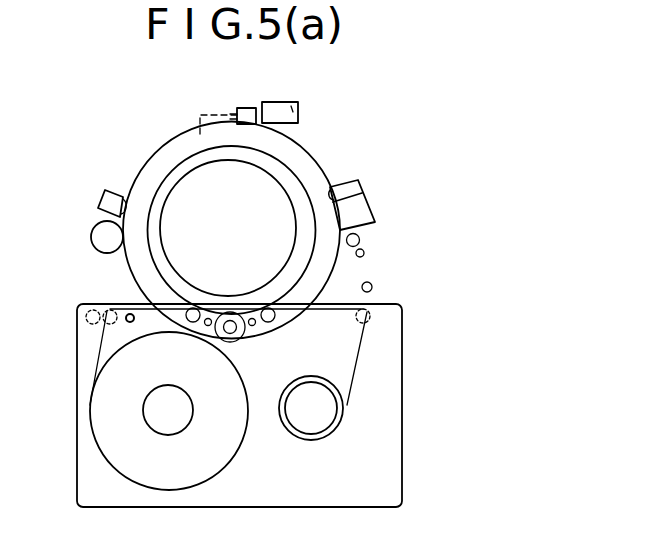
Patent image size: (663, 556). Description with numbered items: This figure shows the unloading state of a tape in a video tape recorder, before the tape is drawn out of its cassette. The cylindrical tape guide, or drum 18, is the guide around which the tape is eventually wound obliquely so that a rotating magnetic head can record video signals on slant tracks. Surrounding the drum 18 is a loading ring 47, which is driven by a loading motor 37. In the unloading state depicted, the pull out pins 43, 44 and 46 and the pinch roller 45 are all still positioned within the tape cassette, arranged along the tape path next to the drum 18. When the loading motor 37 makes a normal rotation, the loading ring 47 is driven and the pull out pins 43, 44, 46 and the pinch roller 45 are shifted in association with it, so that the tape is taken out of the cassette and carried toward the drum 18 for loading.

The cylindrical tape guide 18 is at (272, 198).
The loading ring 47 is at (157, 180).
The loading motor 37 is at (298, 104).
The pull out pin 43 is at (193, 322).
The pull out pin 44 is at (272, 321).
The pinch roller 45 is at (239, 338).
The pull out pin 46 is at (130, 322).